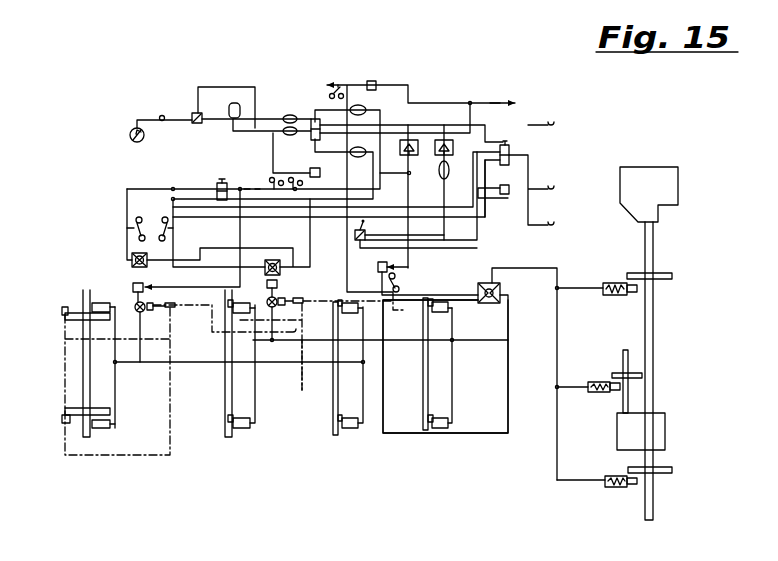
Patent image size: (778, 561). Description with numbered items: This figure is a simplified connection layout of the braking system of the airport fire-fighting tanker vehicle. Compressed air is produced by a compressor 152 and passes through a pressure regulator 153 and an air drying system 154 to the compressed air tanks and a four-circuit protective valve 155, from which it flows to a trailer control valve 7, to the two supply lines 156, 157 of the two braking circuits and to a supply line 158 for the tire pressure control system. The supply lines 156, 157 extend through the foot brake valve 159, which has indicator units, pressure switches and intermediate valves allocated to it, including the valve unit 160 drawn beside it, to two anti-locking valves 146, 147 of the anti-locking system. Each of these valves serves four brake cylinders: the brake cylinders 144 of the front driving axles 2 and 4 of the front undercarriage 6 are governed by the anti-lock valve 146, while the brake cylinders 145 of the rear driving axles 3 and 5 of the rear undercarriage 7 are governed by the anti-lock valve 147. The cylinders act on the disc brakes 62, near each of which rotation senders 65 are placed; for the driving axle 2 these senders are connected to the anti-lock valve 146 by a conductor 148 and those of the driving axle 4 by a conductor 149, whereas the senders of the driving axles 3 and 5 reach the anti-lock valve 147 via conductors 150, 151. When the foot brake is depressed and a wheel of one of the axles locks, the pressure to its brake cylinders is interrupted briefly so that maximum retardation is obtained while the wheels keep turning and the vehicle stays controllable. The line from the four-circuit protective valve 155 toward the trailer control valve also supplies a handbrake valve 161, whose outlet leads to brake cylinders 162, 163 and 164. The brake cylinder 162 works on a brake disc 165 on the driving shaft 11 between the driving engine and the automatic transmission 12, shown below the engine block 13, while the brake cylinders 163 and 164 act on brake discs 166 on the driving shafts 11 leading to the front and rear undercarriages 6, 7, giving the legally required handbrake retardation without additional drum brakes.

The front driving axle 2 is at (82, 372).
The rear driving axle 3 is at (222, 390).
The front driving axle 4 is at (332, 375).
The rear driving axle 5 is at (420, 395).
The front undercarriage 6 is at (143, 422).
The rear undercarriage 7 is at (422, 440).
The driving shaft 11 is at (650, 250).
The automatic transmission 12 is at (653, 435).
The feed hopper 13 is at (647, 175).
The disc brake 62 is at (80, 414).
The rotation sender 65 is at (55, 303).
The brake cylinder 144 is at (62, 305).
The brake cylinder 145 is at (240, 310).
The anti-locking valve 146 is at (132, 304).
The anti-locking valve 147 is at (399, 288).
The conductor 148 is at (170, 435).
The conductor 149 is at (282, 333).
The conductor 150 is at (303, 392).
The conductor 151 is at (428, 308).
The compressor 152 is at (131, 138).
The pressure regulator 153 is at (192, 114).
The air drying system 154 is at (240, 106).
The four-circuit protective valve 155 is at (311, 125).
The supply line 156 is at (504, 144).
The supply line 157 is at (259, 186).
The supply line 158 is at (493, 101).
The foot brake valve 159 is at (248, 192).
The pressure relief valve 160 is at (217, 183).
The handbrake valve 161 is at (380, 238).
The brake cylinder 162 is at (617, 283).
The brake cylinder 163 is at (600, 382).
The brake cylinder 164 is at (608, 488).
The brake disc 165 is at (632, 273).
The brake disc 166 is at (633, 372).